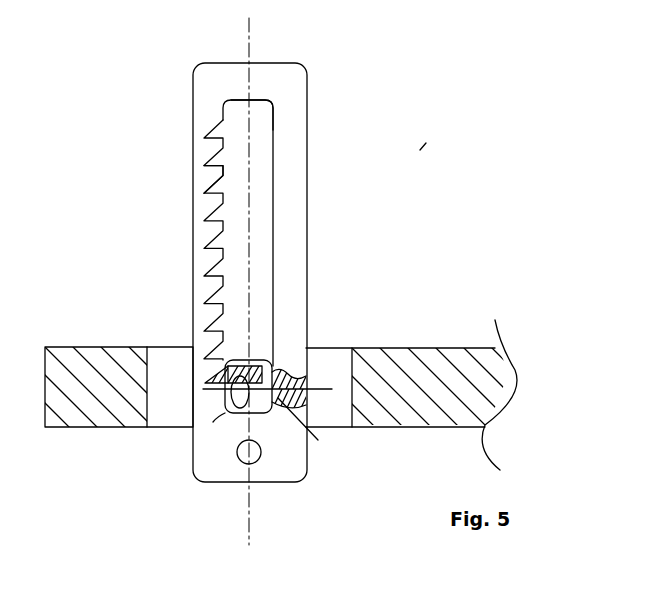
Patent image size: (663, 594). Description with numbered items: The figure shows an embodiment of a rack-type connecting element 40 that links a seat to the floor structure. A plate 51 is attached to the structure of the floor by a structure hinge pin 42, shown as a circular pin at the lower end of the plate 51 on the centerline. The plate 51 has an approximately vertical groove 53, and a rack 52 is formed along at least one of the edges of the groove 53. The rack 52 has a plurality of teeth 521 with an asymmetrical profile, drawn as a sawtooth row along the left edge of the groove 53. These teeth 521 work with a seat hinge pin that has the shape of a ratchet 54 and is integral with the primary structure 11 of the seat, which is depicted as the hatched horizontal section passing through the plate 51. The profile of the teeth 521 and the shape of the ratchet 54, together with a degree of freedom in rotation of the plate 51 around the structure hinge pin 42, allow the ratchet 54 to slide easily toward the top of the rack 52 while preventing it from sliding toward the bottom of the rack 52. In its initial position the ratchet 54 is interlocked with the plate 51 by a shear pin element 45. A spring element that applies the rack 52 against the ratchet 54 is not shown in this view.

The primary structure 11 is at (413, 362).
The connecting element 40 is at (425, 142).
The structure hinge pin 42 is at (250, 455).
The shear pin element 45 is at (290, 420).
The plate 51 is at (293, 102).
The rack 52 is at (212, 135).
The teeth 521 is at (208, 176).
The groove 53 is at (260, 127).
The ratchet 54 is at (226, 408).